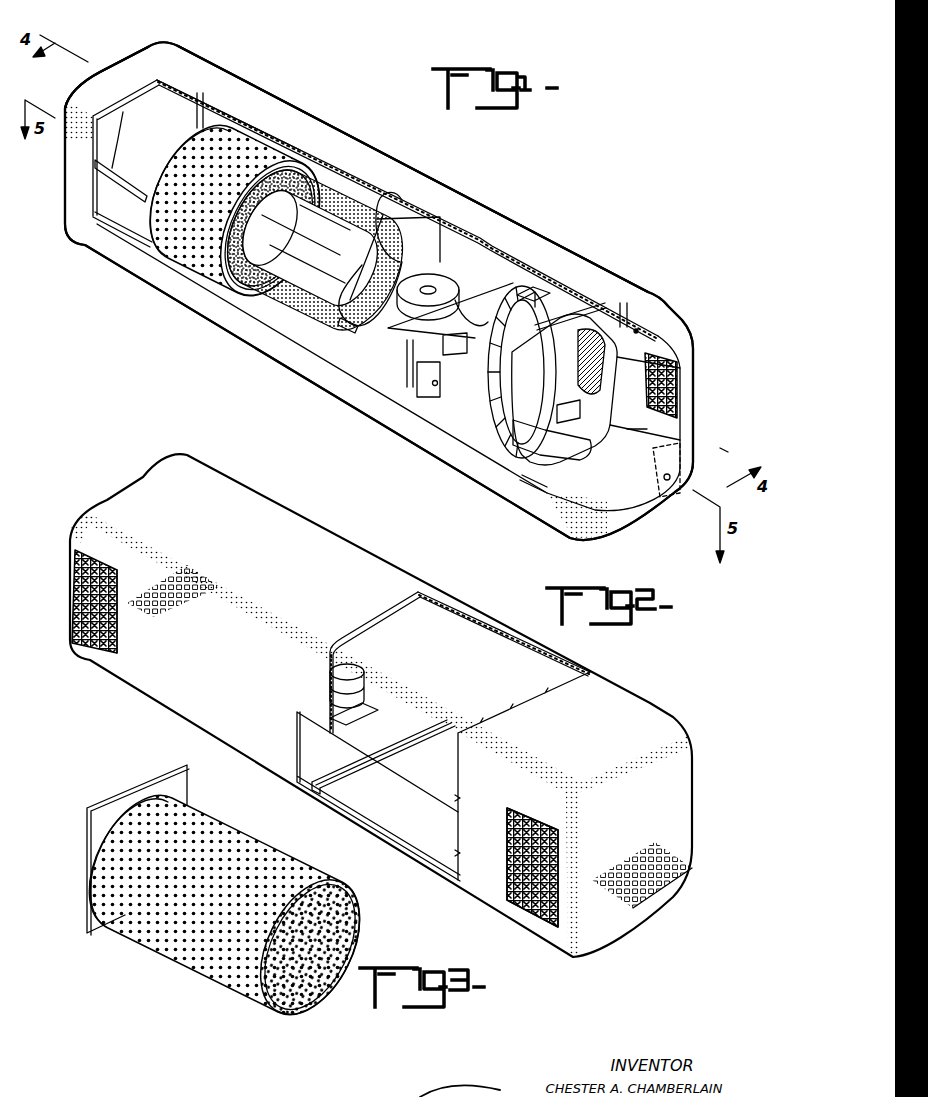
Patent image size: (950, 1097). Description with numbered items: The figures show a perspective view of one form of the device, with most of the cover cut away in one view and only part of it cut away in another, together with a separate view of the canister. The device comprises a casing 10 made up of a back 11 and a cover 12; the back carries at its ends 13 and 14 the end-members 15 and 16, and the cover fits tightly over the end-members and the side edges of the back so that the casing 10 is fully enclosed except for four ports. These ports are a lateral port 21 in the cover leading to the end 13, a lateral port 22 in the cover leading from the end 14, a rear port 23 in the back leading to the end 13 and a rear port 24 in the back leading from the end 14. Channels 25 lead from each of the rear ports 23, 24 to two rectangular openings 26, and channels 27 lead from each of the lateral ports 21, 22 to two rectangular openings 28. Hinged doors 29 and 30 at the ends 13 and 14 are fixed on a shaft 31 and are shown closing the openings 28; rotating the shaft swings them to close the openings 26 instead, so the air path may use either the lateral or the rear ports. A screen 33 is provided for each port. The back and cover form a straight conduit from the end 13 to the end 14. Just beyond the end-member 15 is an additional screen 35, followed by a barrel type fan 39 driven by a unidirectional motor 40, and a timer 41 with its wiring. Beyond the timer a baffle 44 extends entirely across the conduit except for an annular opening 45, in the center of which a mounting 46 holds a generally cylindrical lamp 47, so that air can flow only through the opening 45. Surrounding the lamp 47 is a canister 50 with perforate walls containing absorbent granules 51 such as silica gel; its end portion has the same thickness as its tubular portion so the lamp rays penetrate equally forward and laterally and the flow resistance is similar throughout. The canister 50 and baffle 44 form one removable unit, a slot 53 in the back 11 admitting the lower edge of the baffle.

In FIG. 1, the casing 10 is at (453, 188).
In FIG. 1, the back 11 is at (393, 375).
In FIG. 1, the cover 12 is at (390, 158).
In FIG. 1, the end 13 is at (693, 407).
In FIG. 2, the end 13 is at (105, 498).
In FIG. 1, the end 14 is at (100, 70).
In FIG. 2, the end 14 is at (687, 860).
In FIG. 1, the end-member 15 is at (655, 433).
In FIG. 1, the end-member 16 is at (123, 113).
In FIG. 1, the lateral port 21 is at (680, 367).
In FIG. 2, the lateral port 21 is at (115, 622).
In FIG. 1, the lateral port 22 is at (197, 88).
In FIG. 2, the lateral port 22 is at (515, 958).
In FIG. 2, the rear port 23 is at (170, 613).
In FIG. 2, the rear port 24 is at (653, 910).
In FIG. 1, the channel 25 is at (538, 477).
In FIG. 1, the rectangular opening 26 is at (580, 442).
In FIG. 1, the channel 27 is at (634, 330).
In FIG. 1, the rectangular opening 28 is at (657, 348).
In FIG. 1, the hinged door 29 is at (637, 419).
In FIG. 1, the hinged door 30 is at (130, 148).
In FIG. 1, the shaft 31 is at (645, 398).
In FIG. 2, the shaft 31 is at (397, 793).
In FIG. 2, the screen 33 is at (513, 900).
In FIG. 1, the additional screen 35 is at (600, 370).
In FIG. 1, the fan 39 is at (560, 300).
In FIG. 1, the motor 40 is at (463, 423).
In FIG. 1, the timer 41 is at (447, 283).
In FIG. 1, the baffle 44 is at (437, 253).
In FIG. 3, the baffle 44 is at (187, 792).
In FIG. 1, the annular opening 45 is at (347, 318).
In FIG. 1, the mounting 46 is at (413, 258).
In FIG. 1, the lamp 47 is at (315, 205).
In FIG. 1, the canister 50 is at (263, 153).
In FIG. 3, the canister 50 is at (270, 850).
In FIG. 1, the absorbent granules 51 is at (303, 233).
In FIG. 2, the slot 53 is at (417, 730).